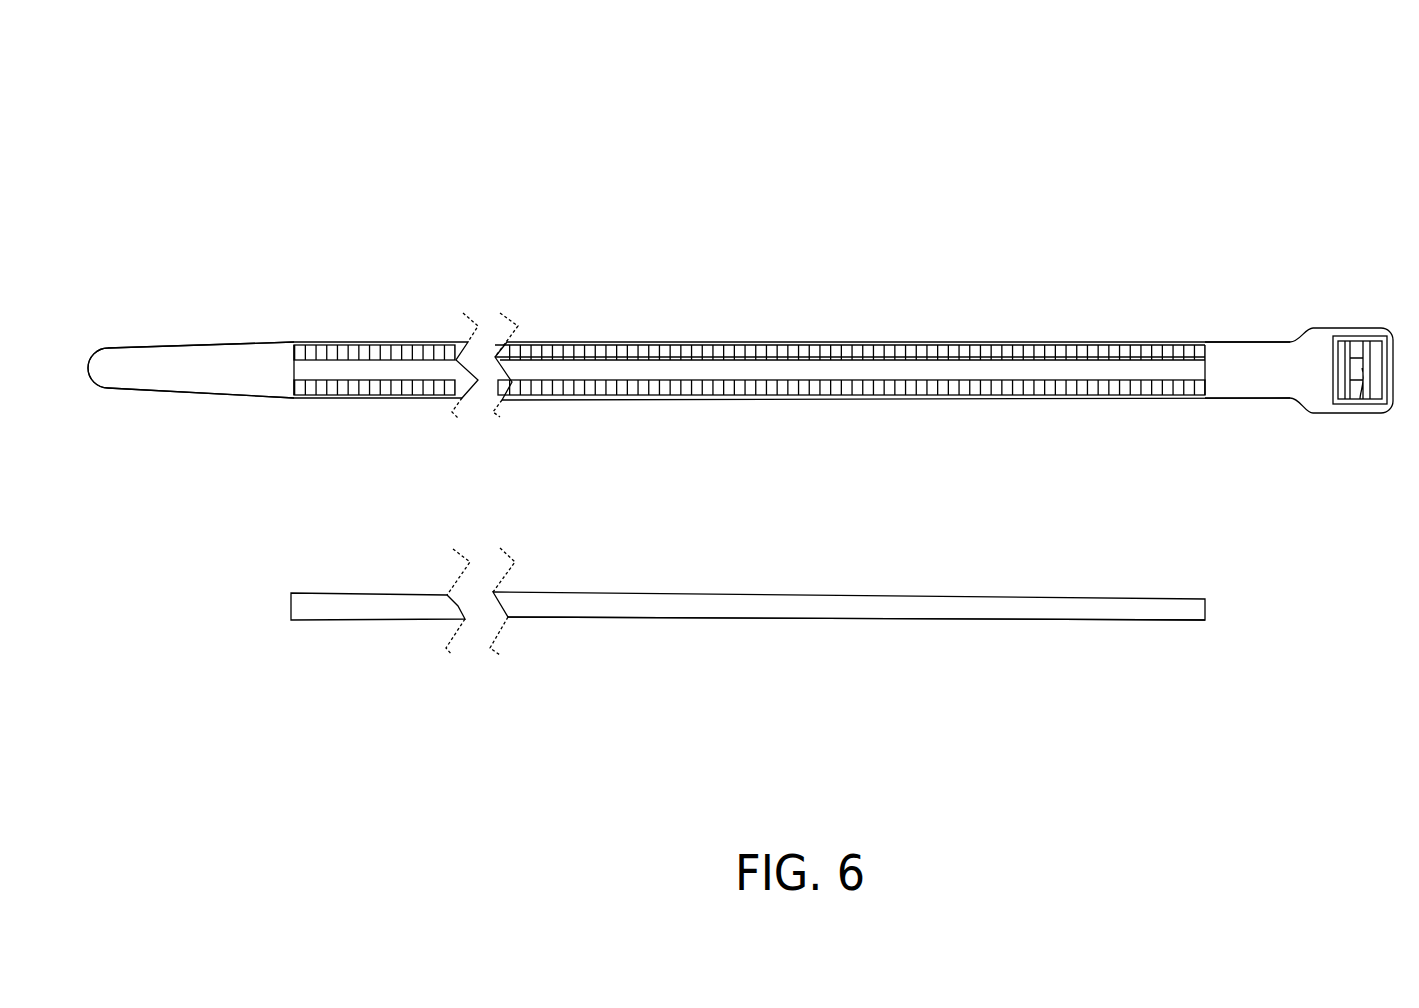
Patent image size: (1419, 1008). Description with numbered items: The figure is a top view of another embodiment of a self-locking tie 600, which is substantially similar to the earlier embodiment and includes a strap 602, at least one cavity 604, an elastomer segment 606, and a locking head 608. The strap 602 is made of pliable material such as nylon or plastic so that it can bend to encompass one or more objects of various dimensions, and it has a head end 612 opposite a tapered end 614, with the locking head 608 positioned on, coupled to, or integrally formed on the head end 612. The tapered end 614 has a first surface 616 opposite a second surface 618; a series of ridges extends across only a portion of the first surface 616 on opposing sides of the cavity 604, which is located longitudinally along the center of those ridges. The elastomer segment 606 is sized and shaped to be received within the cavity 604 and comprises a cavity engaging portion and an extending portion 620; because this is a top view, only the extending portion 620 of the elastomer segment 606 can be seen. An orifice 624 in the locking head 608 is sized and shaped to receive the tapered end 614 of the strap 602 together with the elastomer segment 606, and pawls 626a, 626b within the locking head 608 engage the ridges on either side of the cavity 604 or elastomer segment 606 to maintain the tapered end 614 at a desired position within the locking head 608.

The self-locking tie 600 is at (383, 132).
The strap 602 is at (822, 344).
The cavity 604 is at (952, 367).
The elastomer segment 606 is at (685, 603).
The locking head 608 is at (1320, 338).
The head end 612 is at (1277, 352).
The tapered end 614 is at (195, 360).
The first surface 616 is at (275, 352).
The second surface 618 is at (217, 405).
The extending portion 620 is at (843, 606).
The orifice 624 is at (1380, 405).
The pawl 626a is at (1357, 348).
The pawl 626b is at (1353, 402).